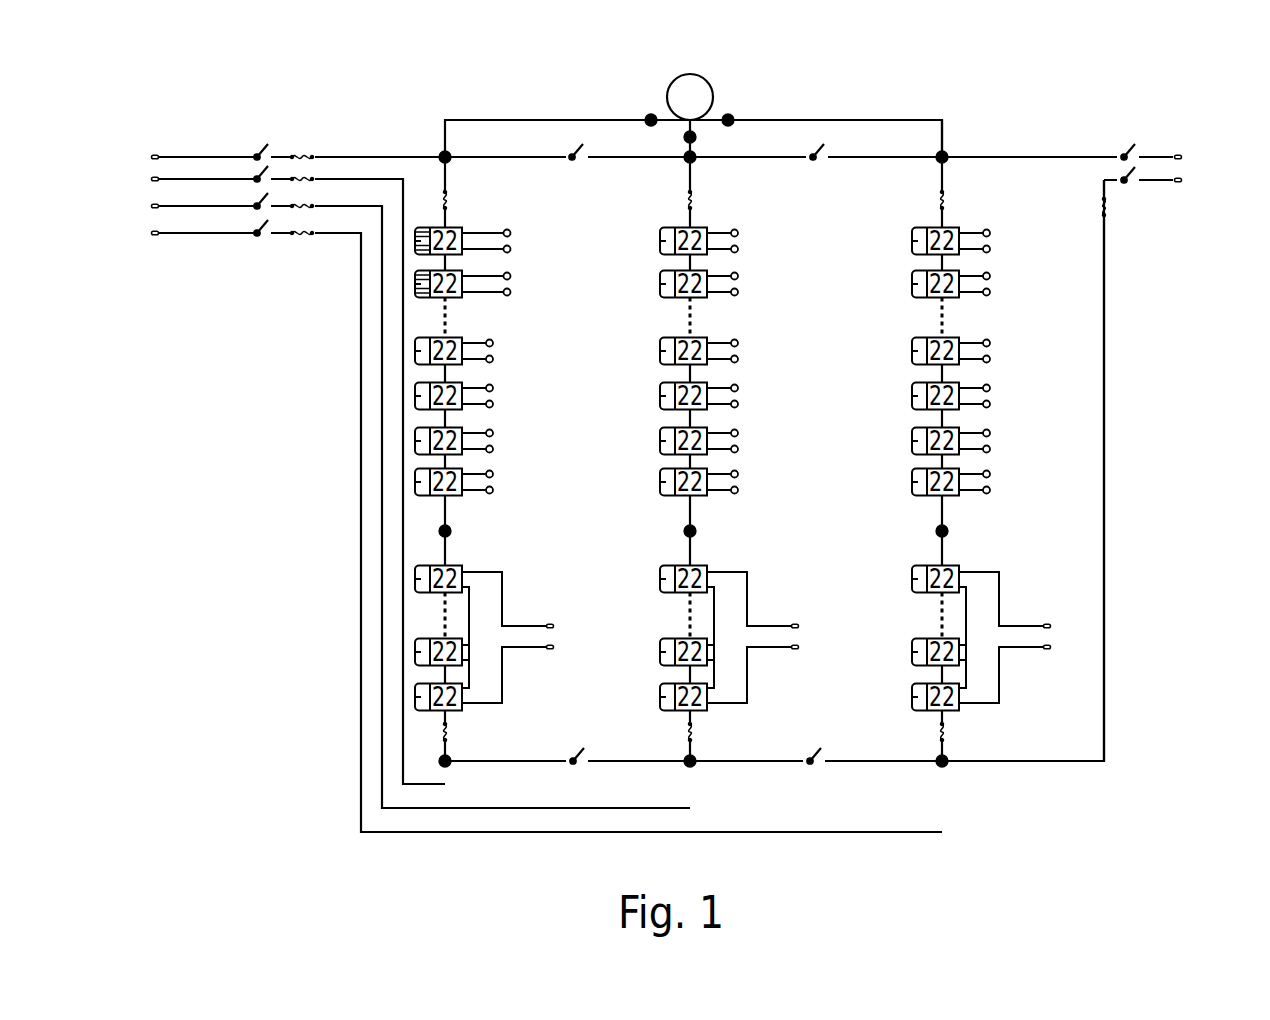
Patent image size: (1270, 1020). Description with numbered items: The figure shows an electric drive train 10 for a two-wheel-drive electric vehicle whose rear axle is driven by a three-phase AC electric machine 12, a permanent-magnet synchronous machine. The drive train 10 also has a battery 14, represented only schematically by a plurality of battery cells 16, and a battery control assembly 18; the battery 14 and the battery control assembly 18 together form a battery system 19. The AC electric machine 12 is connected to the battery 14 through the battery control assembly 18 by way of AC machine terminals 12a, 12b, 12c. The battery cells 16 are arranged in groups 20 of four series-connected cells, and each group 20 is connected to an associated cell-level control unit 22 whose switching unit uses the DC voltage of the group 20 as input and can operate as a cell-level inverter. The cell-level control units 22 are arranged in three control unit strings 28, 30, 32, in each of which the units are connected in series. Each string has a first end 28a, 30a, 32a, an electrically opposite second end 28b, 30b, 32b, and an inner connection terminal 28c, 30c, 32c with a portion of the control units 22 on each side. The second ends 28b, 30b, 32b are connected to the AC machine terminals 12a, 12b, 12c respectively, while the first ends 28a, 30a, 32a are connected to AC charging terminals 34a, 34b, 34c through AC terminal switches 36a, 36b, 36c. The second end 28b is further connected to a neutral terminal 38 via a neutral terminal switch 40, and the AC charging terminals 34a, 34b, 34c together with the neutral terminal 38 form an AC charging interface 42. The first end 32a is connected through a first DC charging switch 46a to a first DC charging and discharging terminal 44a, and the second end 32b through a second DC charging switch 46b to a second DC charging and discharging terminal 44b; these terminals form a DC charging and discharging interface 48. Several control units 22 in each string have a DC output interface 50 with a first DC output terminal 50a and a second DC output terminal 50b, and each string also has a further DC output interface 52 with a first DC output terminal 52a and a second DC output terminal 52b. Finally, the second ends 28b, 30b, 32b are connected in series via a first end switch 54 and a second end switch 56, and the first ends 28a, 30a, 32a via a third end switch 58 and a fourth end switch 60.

The electric drive train 10 is at (1047, 105).
The AC electric machine 12 is at (689, 92).
The AC machine terminal 12a is at (650, 114).
The AC machine terminal 12b is at (695, 133).
The AC machine terminal 12c is at (733, 117).
The battery 14 is at (939, 103).
The battery cells 16 is at (410, 239).
The battery control assembly 18 is at (831, 88).
The battery system 19 is at (964, 105).
The group of battery cells 20 is at (415, 252).
The cell-level control unit 22 is at (693, 469).
The first control unit string 28 is at (418, 182).
The first end of first control unit string 28a is at (450, 766).
The second end of first control unit string 28b is at (445, 150).
The inner connection terminal of first control unit string 28c is at (451, 531).
The second control unit string 30 is at (654, 192).
The first end of second control unit string 30a is at (695, 766).
The second end of second control unit string 30b is at (695, 160).
The inner connection terminal of second control unit string 30c is at (696, 531).
The third control unit string 32 is at (959, 199).
The first end of third control unit string 32a is at (950, 766).
The second end of third control unit string 32b is at (938, 160).
The inner connection terminal of third control unit string 32c is at (948, 531).
The AC charging terminal 34a is at (279, 473).
The AC charging terminal 34b is at (402, 499).
The AC charging terminal 34c is at (528, 524).
The AC terminal switch 36a is at (251, 171).
The AC terminal switch 36b is at (250, 213).
The AC terminal switch 36c is at (264, 244).
The neutral terminal 38 is at (284, 157).
The neutral terminal switch 40 is at (278, 131).
The AC charging interface 42 is at (129, 107).
The first DC charging and discharging terminal 44a is at (1163, 463).
The second DC charging and discharging terminal 44b is at (1086, 157).
The first DC charging switch 46a is at (1137, 199).
The second DC charging switch 46b is at (1151, 140).
The DC charging and discharging interface 48 is at (1203, 207).
The DC output interface 50 is at (771, 338).
The first DC output terminal 50a is at (508, 229).
The second DC output terminal 50b is at (511, 251).
The further DC output interface 52 is at (815, 651).
The first DC output terminal of further DC output interface 52a is at (552, 622).
The second DC output terminal of further DC output interface 52b is at (552, 652).
The first end switch 54 is at (571, 146).
The second end switch 56 is at (823, 146).
The third end switch 58 is at (574, 777).
The fourth end switch 60 is at (812, 779).